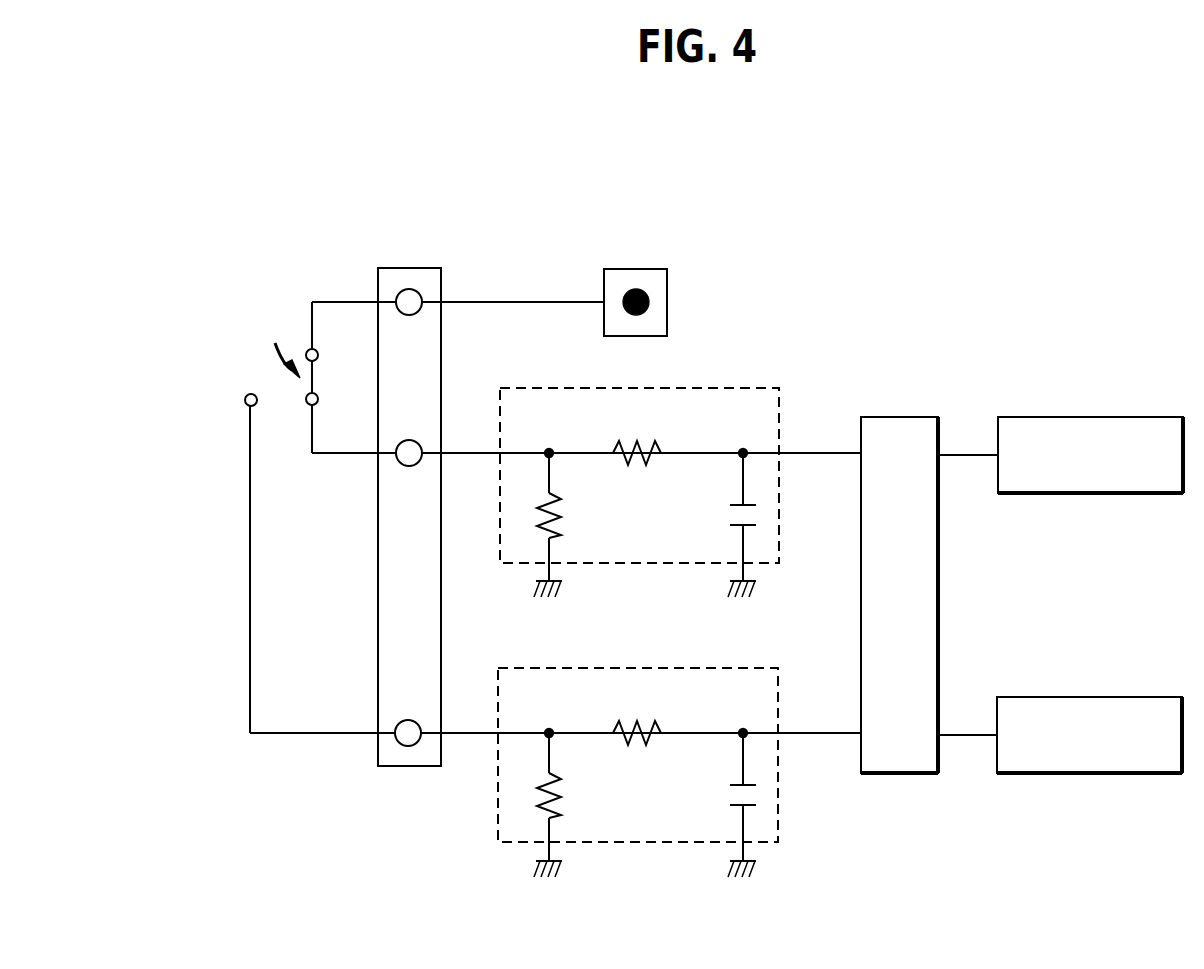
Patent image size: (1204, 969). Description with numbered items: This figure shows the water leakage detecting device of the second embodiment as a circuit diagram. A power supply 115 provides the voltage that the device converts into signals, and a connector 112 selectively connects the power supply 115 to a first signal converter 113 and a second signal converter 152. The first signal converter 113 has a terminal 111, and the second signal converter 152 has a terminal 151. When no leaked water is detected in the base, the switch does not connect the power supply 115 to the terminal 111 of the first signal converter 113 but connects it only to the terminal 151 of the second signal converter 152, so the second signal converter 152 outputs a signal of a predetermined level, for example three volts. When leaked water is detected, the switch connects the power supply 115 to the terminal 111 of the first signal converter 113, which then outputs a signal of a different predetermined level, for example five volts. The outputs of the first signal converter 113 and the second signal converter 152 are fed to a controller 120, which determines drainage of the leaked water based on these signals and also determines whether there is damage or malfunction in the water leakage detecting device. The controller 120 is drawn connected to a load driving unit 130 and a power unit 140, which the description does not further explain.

The terminal 111 is at (318, 402).
The connector 112 is at (409, 767).
The first signal converter 113 is at (722, 388).
The power supply 115 is at (637, 276).
The controller 120 is at (899, 774).
The load driving unit 130 is at (1127, 430).
The power unit 140 is at (1087, 774).
The terminal 151 is at (245, 399).
The second signal converter 152 is at (655, 843).